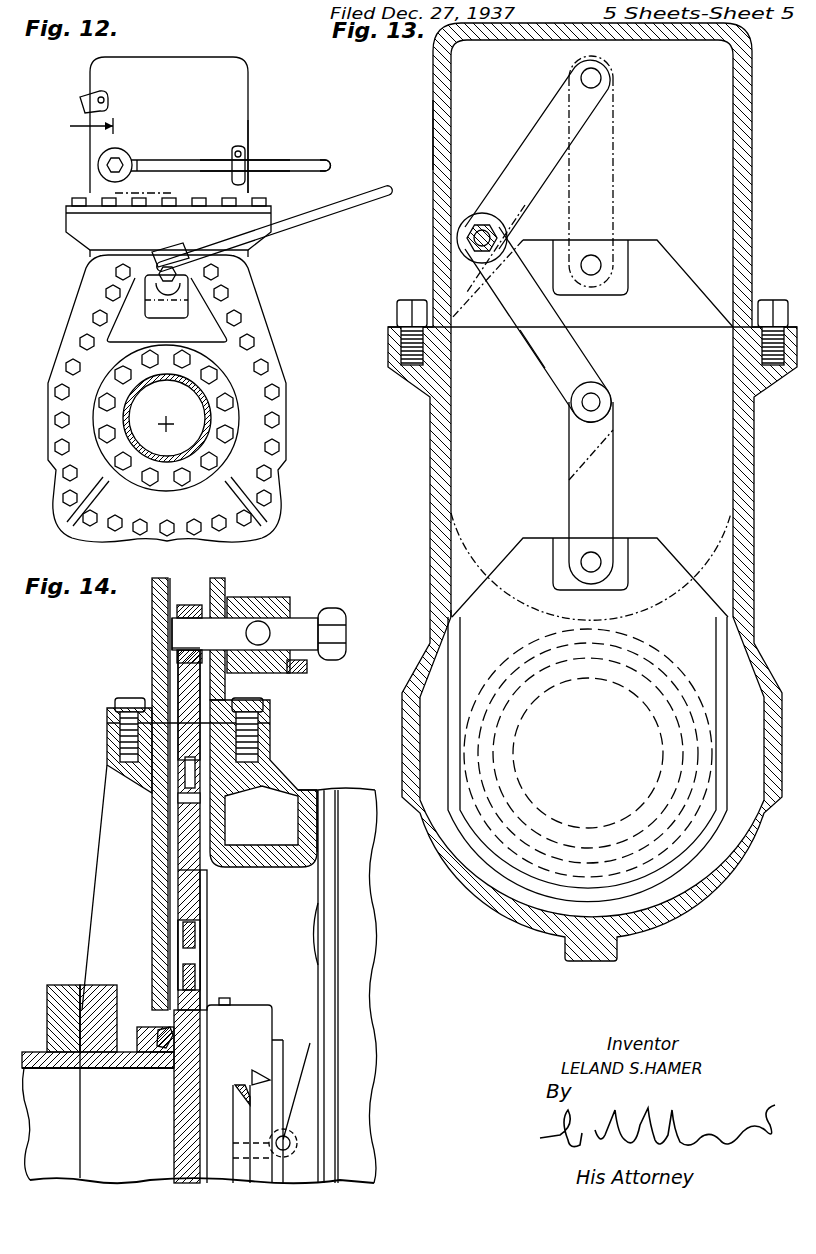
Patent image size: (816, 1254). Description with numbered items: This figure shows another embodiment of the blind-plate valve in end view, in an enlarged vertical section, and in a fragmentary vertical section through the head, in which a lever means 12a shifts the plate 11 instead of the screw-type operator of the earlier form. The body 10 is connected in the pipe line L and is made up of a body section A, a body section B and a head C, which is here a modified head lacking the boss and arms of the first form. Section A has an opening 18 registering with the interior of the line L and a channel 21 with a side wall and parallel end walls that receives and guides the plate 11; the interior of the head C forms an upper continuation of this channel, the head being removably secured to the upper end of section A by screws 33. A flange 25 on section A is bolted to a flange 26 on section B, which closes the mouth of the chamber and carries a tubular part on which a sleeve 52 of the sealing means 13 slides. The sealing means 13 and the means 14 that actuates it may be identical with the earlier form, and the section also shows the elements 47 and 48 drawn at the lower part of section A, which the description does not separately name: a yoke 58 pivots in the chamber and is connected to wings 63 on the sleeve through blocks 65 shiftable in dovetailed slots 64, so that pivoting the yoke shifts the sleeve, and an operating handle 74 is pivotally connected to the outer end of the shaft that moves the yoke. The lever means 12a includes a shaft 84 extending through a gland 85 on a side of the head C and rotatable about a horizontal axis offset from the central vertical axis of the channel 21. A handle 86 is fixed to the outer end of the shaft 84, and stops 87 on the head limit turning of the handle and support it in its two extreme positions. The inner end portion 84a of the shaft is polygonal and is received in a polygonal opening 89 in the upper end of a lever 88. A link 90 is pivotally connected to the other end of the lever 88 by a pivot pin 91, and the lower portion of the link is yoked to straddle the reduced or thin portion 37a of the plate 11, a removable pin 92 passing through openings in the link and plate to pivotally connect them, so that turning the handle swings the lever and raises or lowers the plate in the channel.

In FIG. 12, the body 10 is at (252, 287).
In FIG. 13, the body 10 is at (430, 487).
In FIG. 14, the body 10 is at (99, 851).
In FIG. 13, the plate 11 is at (663, 275).
In FIG. 14, the plate 11 is at (174, 1105).
In FIG. 12, the lever means 12a is at (285, 160).
In FIG. 13, the lever means 12a is at (536, 363).
In FIG. 14, the lever means 12a is at (178, 893).
In FIG. 14, the sealing means 13 is at (243, 1014).
In FIG. 12, the actuating and controlling means 14 is at (75, 134).
In FIG. 14, the actuating and controlling means 14 is at (315, 930).
In FIG. 14, the opening 18 is at (198, 1125).
In FIG. 13, the channel 21 is at (450, 445).
In FIG. 14, the channel 21 is at (150, 840).
In FIG. 14, the flange 25 is at (300, 820).
In FIG. 14, the flange 26 is at (323, 820).
In FIG. 13, the screws 33 is at (403, 304).
In FIG. 14, the screws 33 is at (118, 703).
In FIG. 13, the reduced portion of plate 37a is at (625, 265).
In FIG. 14, the packing 47 is at (162, 1033).
In FIG. 14, the gland seat 48 is at (164, 1054).
In FIG. 14, the sleeve 52 is at (291, 1048).
In FIG. 14, the yoke 58 is at (310, 1092).
In FIG. 14, the wings 63 is at (236, 1090).
In FIG. 14, the dovetailed slots 64 is at (239, 1146).
In FIG. 14, the blocks 65 is at (239, 1162).
In FIG. 12, the operating handle 74 is at (350, 208).
In FIG. 12, the shaft 84 is at (98, 166).
In FIG. 14, the shaft 84 is at (302, 627).
In FIG. 13, the inner end portion of shaft 84a is at (476, 240).
In FIG. 14, the inner end portion of shaft 84a is at (172, 634).
In FIG. 14, the gland 85 is at (299, 673).
In FIG. 12, the handle 86 is at (319, 160).
In FIG. 14, the handle 86 is at (330, 609).
In FIG. 12, the stops 87 is at (80, 105).
In FIG. 13, the lever 88 is at (527, 157).
In FIG. 14, the lever 88 is at (185, 675).
In FIG. 13, the polygonal opening 89 is at (486, 254).
In FIG. 14, the polygonal opening 89 is at (175, 650).
In FIG. 13, the link 90 is at (604, 167).
In FIG. 14, the link 90 is at (200, 888).
In FIG. 13, the pivot pin 91 is at (600, 405).
In FIG. 13, the removable pin 92 is at (593, 275).
In FIG. 14, the removable pin 92 is at (200, 961).
In FIG. 12, the body section A is at (236, 268).
In FIG. 13, the body section A is at (432, 466).
In FIG. 14, the body section A is at (150, 810).
In FIG. 12, the body section B is at (225, 362).
In FIG. 14, the body section B is at (350, 793).
In FIG. 12, the head C is at (229, 134).
In FIG. 13, the head C is at (433, 136).
In FIG. 14, the head C is at (222, 592).
In FIG. 12, the pipe line L is at (210, 414).
In FIG. 14, the pipe line L is at (34, 1054).